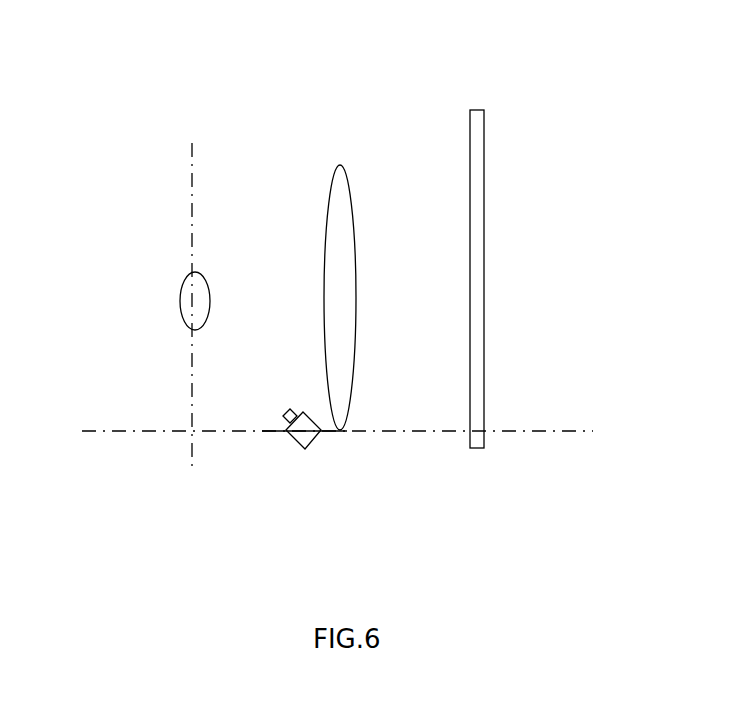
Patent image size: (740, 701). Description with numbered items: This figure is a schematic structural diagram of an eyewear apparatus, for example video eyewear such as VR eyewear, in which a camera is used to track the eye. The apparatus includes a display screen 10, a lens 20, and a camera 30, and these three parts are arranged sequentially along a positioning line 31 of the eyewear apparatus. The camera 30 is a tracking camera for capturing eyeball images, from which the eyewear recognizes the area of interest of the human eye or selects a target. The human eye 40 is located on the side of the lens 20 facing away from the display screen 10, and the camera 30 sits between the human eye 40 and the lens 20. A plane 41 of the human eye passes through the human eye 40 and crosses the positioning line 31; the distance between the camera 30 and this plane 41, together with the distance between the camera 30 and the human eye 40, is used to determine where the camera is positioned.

The display screen 10 is at (373, 233).
The lens 20 is at (234, 253).
The camera 30 is at (359, 476).
The positioning line 31 is at (372, 483).
The human eye 40 is at (124, 245).
The plane of the human eye 41 is at (143, 340).